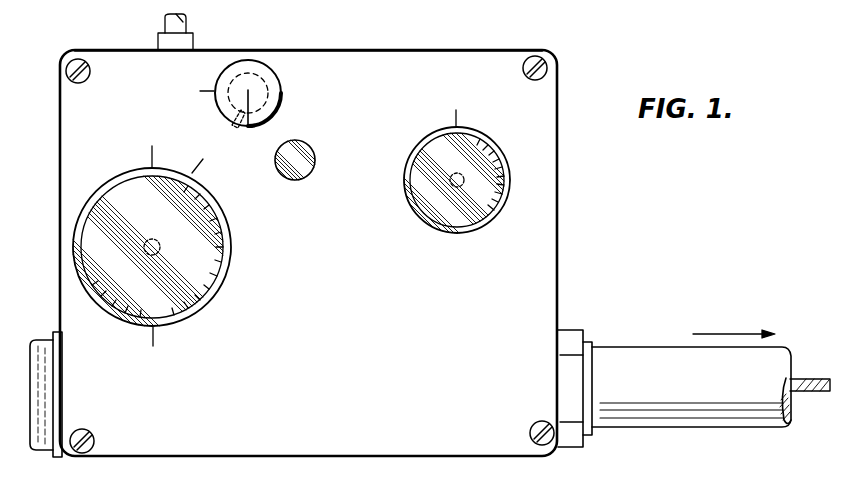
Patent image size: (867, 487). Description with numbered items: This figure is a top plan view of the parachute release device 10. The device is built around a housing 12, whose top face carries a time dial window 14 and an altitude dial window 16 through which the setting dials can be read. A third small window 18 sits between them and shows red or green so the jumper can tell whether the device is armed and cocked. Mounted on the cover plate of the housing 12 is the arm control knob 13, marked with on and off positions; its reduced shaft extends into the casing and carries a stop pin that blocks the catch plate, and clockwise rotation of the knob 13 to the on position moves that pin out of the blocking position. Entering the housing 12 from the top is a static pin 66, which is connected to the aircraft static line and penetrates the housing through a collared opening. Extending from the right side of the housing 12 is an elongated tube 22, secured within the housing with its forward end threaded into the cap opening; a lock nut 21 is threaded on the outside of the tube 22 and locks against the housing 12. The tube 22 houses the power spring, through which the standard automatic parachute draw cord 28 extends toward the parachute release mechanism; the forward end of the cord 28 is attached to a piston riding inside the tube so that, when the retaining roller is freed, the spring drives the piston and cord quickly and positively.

The parachute release device 10 is at (558, 225).
The housing 12 is at (371, 58).
The arm control knob 13 is at (277, 72).
The time dial window 14 is at (425, 196).
The altitude dial window 16 is at (120, 190).
The third small window 18 is at (294, 179).
The lock nut 21 is at (572, 448).
The elongated tube 22 is at (660, 430).
The automatic parachute draw cord 28 is at (807, 393).
The static pin 66 is at (160, 25).